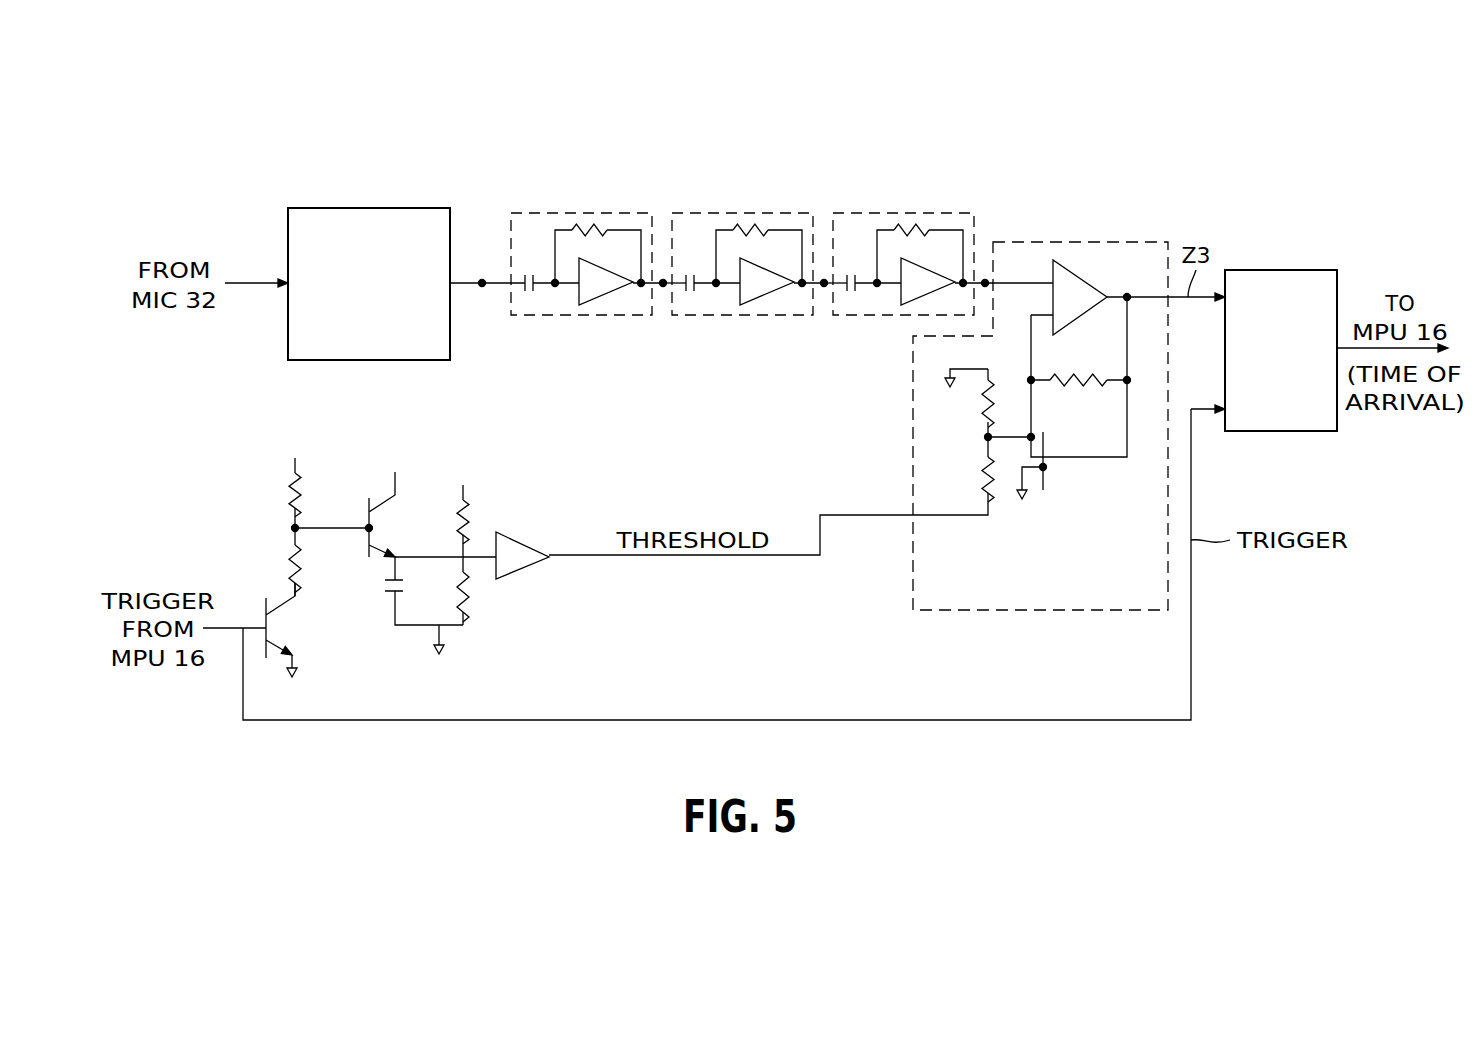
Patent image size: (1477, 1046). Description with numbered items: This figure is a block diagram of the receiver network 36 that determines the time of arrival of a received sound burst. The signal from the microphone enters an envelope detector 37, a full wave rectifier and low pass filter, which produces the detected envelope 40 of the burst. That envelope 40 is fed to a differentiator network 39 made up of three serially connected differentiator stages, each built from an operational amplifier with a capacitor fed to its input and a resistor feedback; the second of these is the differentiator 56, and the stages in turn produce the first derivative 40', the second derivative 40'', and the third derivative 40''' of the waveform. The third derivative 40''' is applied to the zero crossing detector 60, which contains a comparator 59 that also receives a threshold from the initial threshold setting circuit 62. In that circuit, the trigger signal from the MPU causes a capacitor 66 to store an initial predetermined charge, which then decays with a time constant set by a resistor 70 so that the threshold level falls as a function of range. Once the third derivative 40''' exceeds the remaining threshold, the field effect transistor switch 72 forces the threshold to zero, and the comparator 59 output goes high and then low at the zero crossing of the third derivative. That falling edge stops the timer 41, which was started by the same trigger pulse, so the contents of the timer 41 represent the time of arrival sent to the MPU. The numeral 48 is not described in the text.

The network 36 is at (337, 236).
The envelope detector 37 is at (368, 208).
The differentiator network 39 is at (982, 213).
The envelope 40 is at (487, 324).
The first derivative of the waveform 40' is at (665, 324).
The second derivative of the waveform 40'' is at (824, 324).
The third derivative of the waveform 40''' is at (1026, 238).
The differentiator 56 is at (730, 315).
The third differentiator 48 is at (888, 315).
The comparator 59 is at (1090, 268).
The zero crossing detector 60 is at (887, 439).
The field effect transistor switch 72 is at (1048, 467).
The timer 41 is at (1278, 270).
The initial threshold setting circuit 62 is at (376, 568).
The capacitor 66 is at (369, 591).
The resistor 70 is at (485, 601).